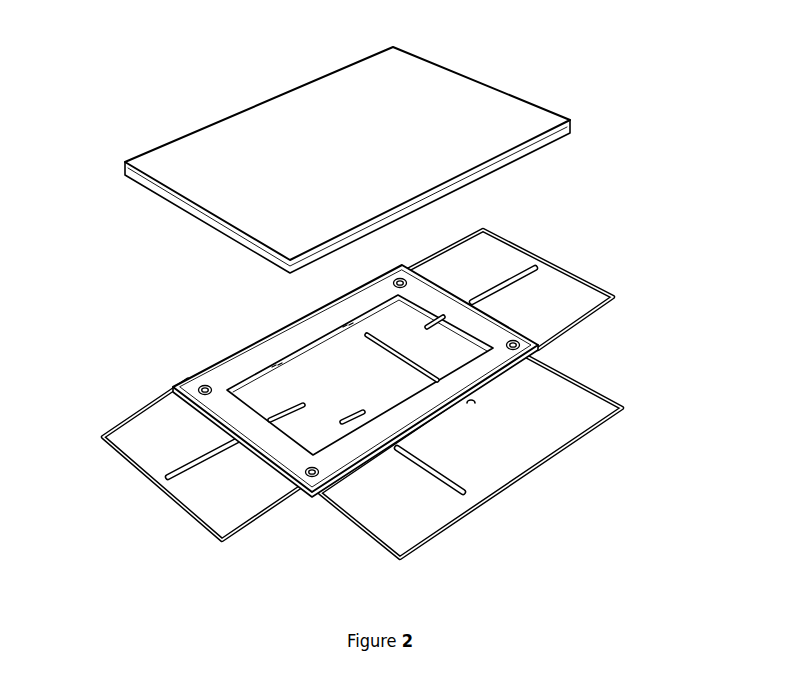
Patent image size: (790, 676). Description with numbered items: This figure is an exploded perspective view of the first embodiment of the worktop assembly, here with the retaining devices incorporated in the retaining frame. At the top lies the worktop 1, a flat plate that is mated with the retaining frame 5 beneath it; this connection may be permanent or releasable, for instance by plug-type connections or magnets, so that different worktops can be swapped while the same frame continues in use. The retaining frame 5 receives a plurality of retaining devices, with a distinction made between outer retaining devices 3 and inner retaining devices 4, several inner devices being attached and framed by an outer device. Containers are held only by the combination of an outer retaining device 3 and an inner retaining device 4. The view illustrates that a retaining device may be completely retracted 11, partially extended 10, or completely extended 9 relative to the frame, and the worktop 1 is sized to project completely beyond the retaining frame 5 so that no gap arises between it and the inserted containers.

The worktop 1 is at (518, 165).
The outer retaining device 3 is at (196, 533).
The inner retaining device 4 is at (168, 483).
The retaining frame 5 is at (235, 343).
The completely extended retaining device 9 is at (438, 545).
The partially extended retaining device 10 is at (472, 498).
The completely retracted retaining device 11 is at (482, 407).